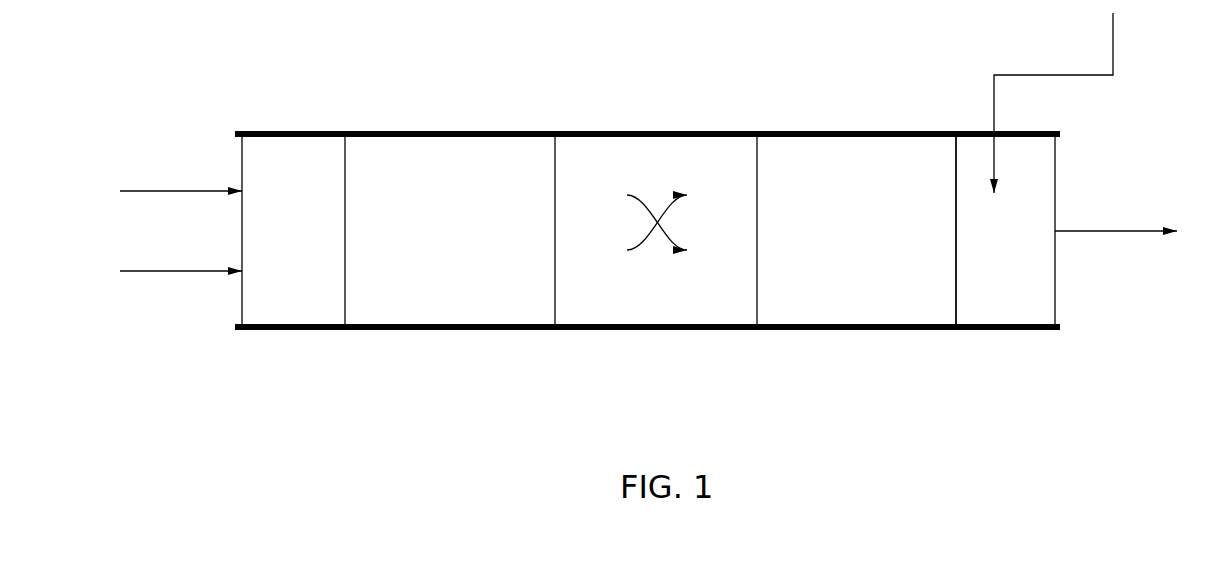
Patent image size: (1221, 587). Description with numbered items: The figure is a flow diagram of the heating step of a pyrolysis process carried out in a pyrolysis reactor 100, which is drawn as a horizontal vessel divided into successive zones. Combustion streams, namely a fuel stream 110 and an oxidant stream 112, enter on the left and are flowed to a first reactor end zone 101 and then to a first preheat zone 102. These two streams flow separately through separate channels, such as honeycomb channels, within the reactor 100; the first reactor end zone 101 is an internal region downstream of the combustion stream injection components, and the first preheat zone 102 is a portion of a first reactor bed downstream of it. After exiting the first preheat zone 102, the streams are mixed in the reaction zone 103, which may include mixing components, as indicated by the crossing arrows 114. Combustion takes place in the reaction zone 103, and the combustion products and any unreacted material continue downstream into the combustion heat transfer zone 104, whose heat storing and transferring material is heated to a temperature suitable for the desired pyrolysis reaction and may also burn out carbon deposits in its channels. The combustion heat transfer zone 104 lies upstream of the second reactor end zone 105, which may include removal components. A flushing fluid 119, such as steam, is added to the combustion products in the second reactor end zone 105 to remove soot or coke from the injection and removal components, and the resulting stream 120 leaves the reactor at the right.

The pyrolysis reactor 100 is at (240, 85).
The first reactor end zone 101 is at (315, 293).
The first preheat zone 102 is at (466, 293).
The reaction zone 103 is at (680, 293).
The combustion heat transfer zone 104 is at (881, 293).
The second reactor end zone 105 is at (1026, 294).
The fuel stream 110 is at (188, 190).
The oxidant stream 112 is at (188, 270).
The arrows 114 is at (666, 207).
The flushing fluid 119 is at (1114, 30).
The product stream 120 is at (1107, 231).